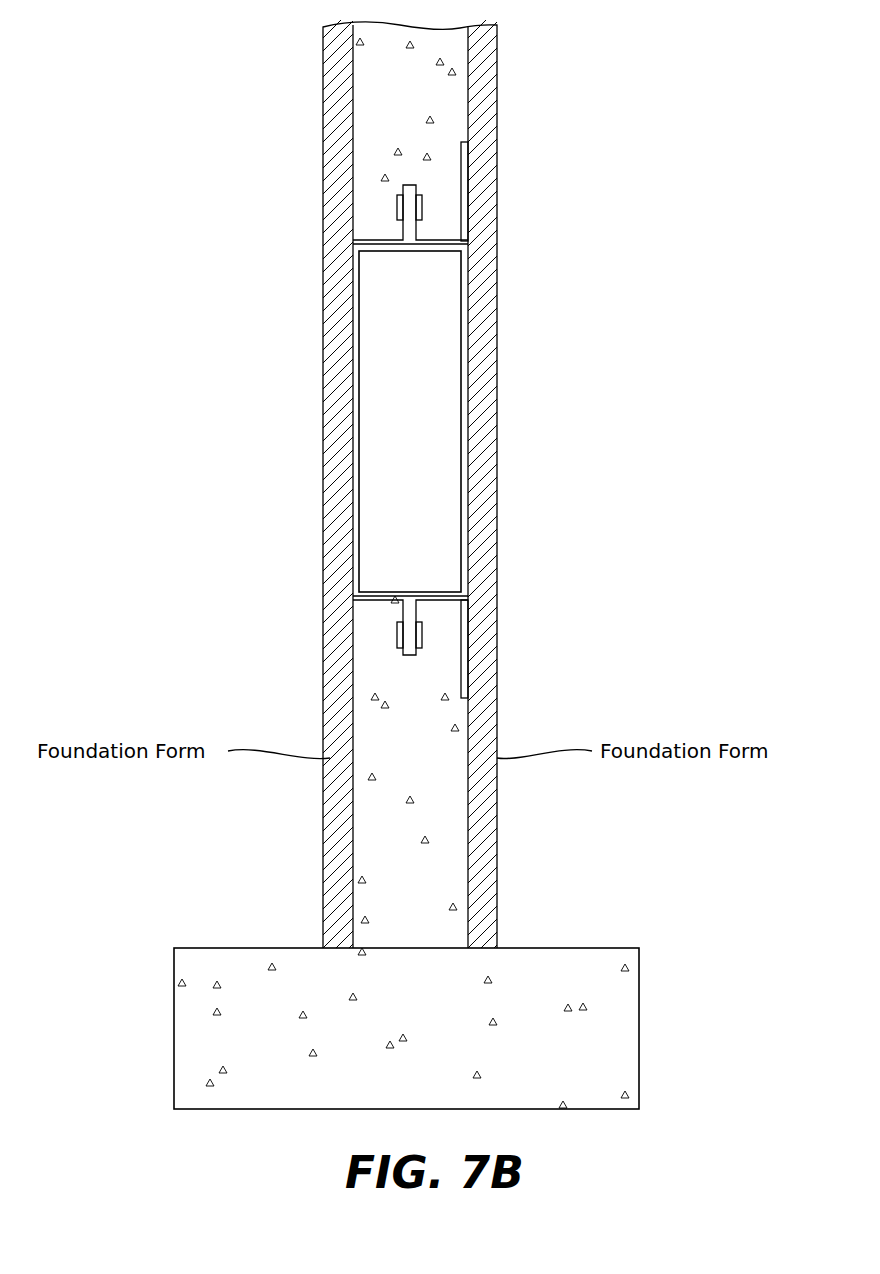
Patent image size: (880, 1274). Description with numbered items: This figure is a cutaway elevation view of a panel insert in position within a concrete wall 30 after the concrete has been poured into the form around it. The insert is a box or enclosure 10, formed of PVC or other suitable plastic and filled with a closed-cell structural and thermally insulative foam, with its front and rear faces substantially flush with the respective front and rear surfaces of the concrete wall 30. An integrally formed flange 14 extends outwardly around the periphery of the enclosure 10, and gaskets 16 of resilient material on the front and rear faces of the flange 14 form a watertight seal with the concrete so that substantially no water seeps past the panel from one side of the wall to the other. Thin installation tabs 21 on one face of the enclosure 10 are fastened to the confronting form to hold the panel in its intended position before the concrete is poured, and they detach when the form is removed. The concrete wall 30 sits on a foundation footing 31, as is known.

The enclosure 10 is at (423, 437).
The flange 14 is at (409, 184).
The gasket 16 is at (397, 210).
The tab 21 is at (465, 166).
The concrete wall 30 is at (410, 800).
The foundation footing 31 is at (558, 948).